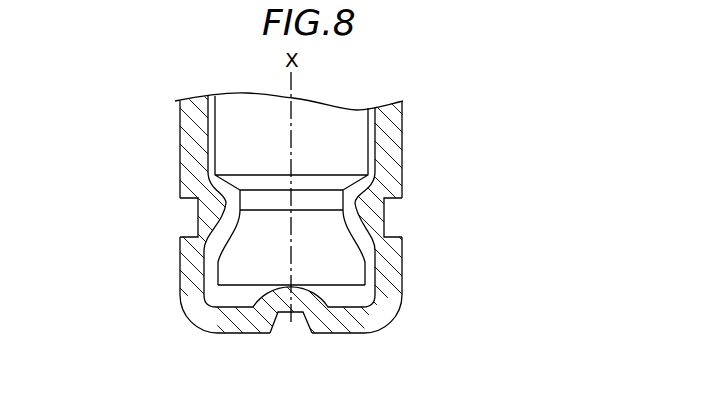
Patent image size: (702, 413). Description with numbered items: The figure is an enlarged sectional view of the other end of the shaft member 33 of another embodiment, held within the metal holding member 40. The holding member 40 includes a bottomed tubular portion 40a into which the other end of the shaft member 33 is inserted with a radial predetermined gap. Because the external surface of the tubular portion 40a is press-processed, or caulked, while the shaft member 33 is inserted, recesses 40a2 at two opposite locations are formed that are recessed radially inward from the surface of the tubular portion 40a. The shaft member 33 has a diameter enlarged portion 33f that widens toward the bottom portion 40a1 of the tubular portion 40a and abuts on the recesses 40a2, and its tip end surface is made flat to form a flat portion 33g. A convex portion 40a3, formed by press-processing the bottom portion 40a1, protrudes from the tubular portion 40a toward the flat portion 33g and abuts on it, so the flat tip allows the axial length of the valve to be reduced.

The shaft member 33 is at (266, 217).
The diameter enlarged portion 33f is at (244, 237).
The flat portion 33g is at (250, 293).
The holding member 40 is at (319, 244).
The tubular portion 40a is at (397, 145).
The bottom portion 40a1 is at (347, 330).
The recess 40a2 is at (198, 218).
The convex portion 40a3 is at (302, 314).